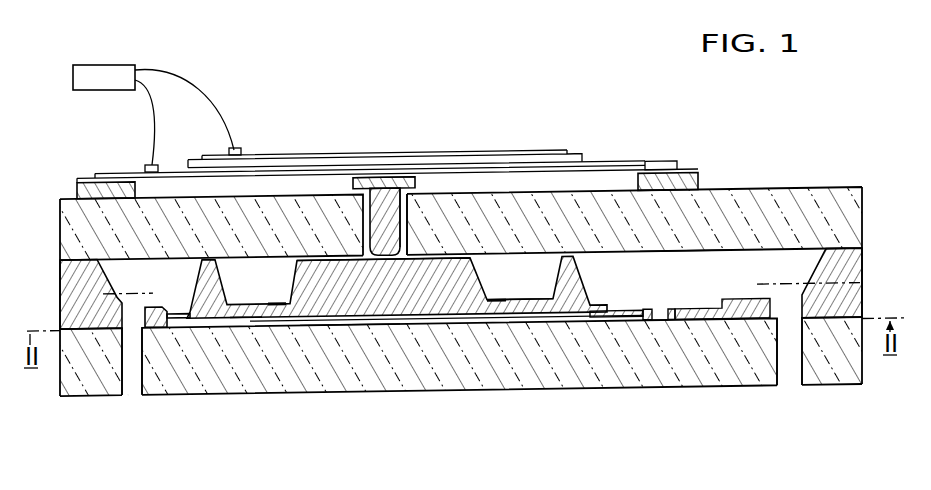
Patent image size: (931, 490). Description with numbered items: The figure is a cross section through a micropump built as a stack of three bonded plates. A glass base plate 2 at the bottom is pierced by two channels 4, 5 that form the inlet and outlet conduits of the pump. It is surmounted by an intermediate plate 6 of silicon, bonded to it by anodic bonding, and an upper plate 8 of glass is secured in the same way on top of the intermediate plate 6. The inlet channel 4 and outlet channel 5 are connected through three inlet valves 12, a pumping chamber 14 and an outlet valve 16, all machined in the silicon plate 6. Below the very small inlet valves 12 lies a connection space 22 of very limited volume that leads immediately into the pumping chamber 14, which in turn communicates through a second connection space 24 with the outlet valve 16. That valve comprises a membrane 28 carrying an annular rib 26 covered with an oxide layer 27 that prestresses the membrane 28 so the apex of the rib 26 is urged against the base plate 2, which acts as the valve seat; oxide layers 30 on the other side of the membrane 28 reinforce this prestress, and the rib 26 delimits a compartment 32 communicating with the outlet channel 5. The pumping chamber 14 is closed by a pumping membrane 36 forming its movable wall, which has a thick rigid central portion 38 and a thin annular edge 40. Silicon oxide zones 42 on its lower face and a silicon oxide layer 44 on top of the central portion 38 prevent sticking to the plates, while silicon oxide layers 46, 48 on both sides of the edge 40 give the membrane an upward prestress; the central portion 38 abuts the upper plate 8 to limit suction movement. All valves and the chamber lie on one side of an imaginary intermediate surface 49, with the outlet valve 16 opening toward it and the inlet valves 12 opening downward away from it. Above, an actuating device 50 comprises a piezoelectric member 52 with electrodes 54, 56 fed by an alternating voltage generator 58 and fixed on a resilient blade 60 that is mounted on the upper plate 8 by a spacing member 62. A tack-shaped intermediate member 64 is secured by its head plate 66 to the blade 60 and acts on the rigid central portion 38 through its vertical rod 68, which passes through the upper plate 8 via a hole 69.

The base plate 2 is at (462, 358).
The inlet channel 4 is at (133, 374).
The outlet channel 5 is at (789, 374).
The intermediate plate 6 is at (842, 287).
The upper plate 8 is at (814, 212).
The inlet valve 12 is at (175, 324).
The pumping chamber 14 is at (350, 327).
The outlet valve 16 is at (658, 329).
The connection space 22 is at (192, 329).
The second connection space 24 is at (621, 324).
The annular rib 26 is at (679, 309).
The oxide layer 27 is at (673, 325).
The membrane 28 is at (645, 308).
The oxide layers 30 is at (604, 310).
The compartment 32 is at (687, 267).
The pumping membrane 36 is at (478, 302).
The rigid central portion 38 is at (430, 285).
The annular edge 40 is at (538, 304).
The silicon oxide zones 42 is at (318, 320).
The silicon oxide layer 44 is at (319, 258).
The silicon oxide layer 46 is at (276, 300).
The silicon oxide layer 48 is at (250, 322).
The intermediate surface 49 is at (131, 290).
The actuating device 50 is at (341, 146).
The piezoelectric member 52 is at (538, 152).
The electrode 54 is at (273, 157).
The electrode 56 is at (125, 176).
The generator 58 is at (105, 78).
The resilient blade 60 is at (660, 161).
The spacing member 62 is at (692, 181).
The intermediate member 64 is at (388, 177).
The head plate 66 is at (359, 177).
The vertical rod 68 is at (402, 221).
The hole 69 is at (412, 228).